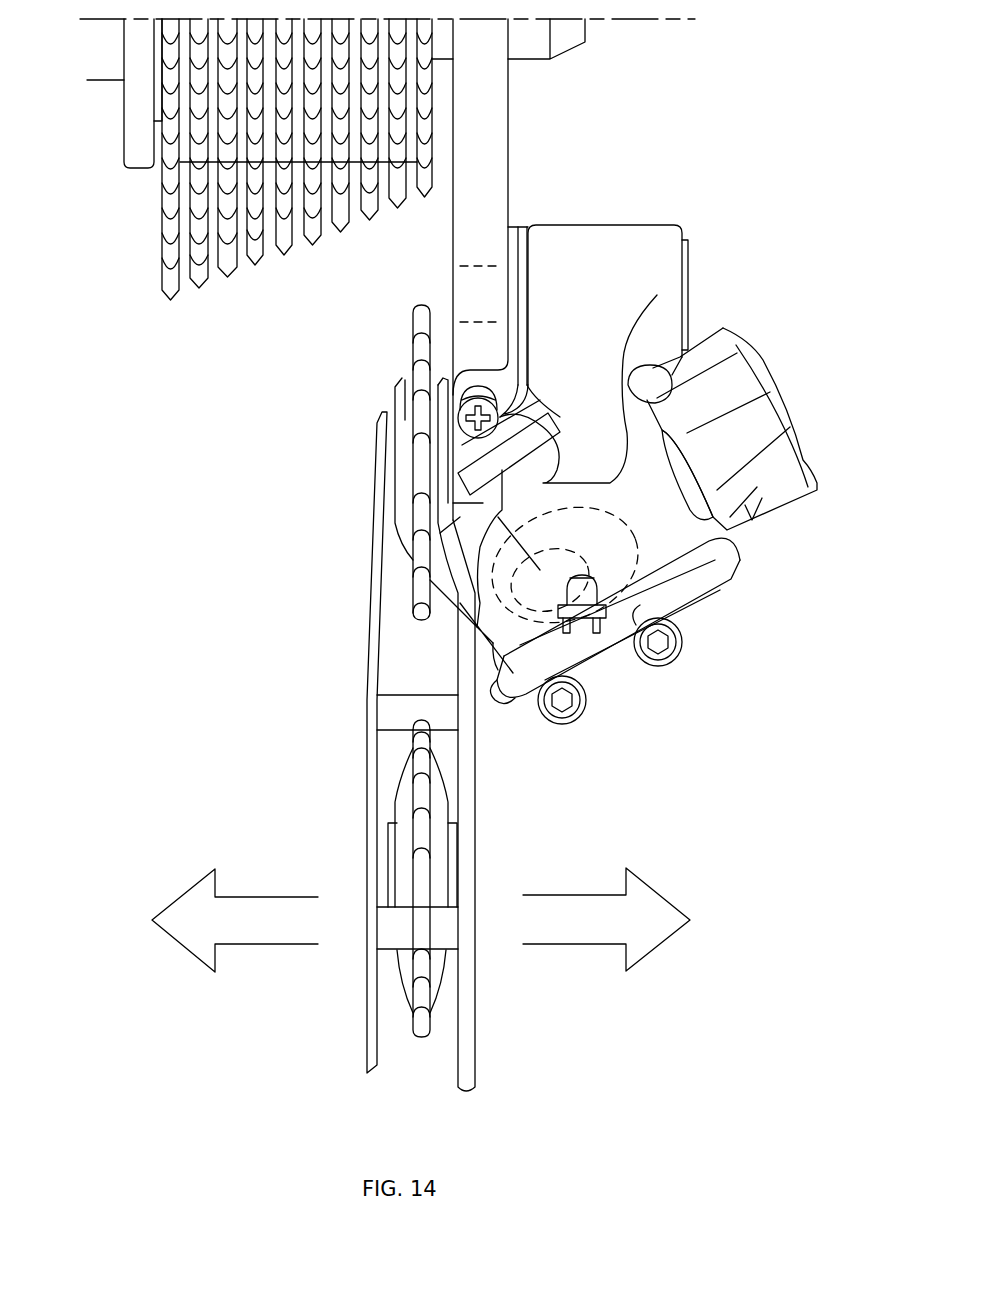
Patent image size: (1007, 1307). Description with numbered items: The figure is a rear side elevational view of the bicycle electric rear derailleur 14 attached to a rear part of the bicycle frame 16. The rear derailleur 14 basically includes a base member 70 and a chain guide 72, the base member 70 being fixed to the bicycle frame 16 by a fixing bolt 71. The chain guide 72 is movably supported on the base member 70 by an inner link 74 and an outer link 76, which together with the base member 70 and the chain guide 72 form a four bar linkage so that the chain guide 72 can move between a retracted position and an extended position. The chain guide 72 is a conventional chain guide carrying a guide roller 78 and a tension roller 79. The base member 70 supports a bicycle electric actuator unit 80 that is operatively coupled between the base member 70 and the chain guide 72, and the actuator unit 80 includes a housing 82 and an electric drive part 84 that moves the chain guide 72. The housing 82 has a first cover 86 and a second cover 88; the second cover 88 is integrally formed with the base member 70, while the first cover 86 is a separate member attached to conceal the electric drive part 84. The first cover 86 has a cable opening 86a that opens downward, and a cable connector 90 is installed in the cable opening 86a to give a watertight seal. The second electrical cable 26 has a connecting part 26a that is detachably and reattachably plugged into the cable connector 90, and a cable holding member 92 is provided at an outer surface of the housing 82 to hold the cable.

The bicycle electric rear derailleur 14 is at (703, 213).
The bicycle frame 16 is at (508, 122).
The second electrical cable 26 is at (588, 688).
The connecting part 26a is at (590, 648).
The base member 70 is at (622, 222).
The fixing bolt 71 is at (688, 268).
The chain guide 72 is at (365, 777).
The inner link 74 is at (480, 575).
The outer link 76 is at (790, 388).
The guide roller 78 is at (413, 333).
The tension roller 79 is at (420, 1038).
The bicycle electric actuator unit 80 is at (493, 645).
The housing 82 is at (678, 617).
The electric drive part 84 is at (633, 537).
The first cover 86 is at (707, 608).
The cable opening 86a is at (632, 667).
The second cover 88 is at (718, 542).
The cable connector 90 is at (677, 617).
The cable holding member 92 is at (508, 707).